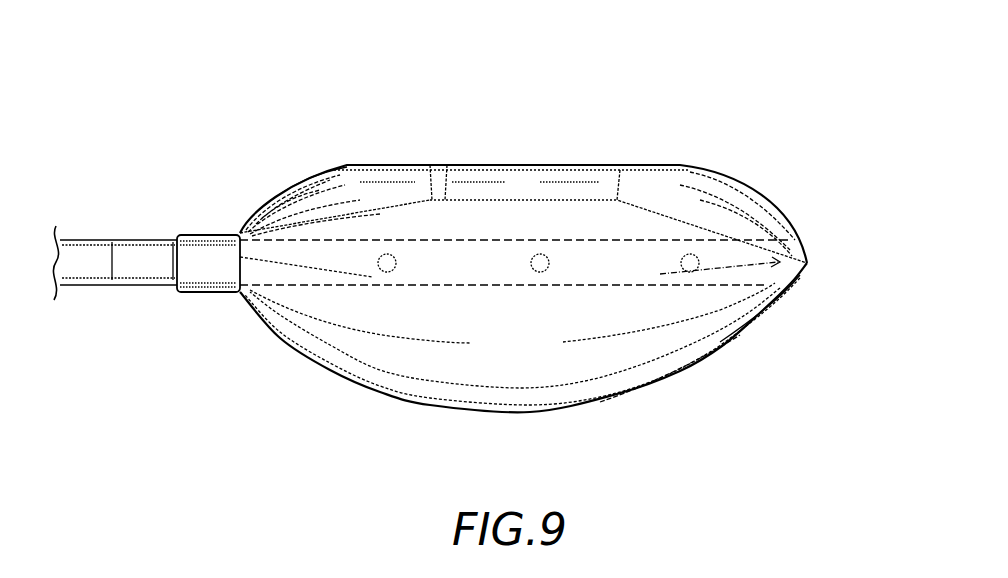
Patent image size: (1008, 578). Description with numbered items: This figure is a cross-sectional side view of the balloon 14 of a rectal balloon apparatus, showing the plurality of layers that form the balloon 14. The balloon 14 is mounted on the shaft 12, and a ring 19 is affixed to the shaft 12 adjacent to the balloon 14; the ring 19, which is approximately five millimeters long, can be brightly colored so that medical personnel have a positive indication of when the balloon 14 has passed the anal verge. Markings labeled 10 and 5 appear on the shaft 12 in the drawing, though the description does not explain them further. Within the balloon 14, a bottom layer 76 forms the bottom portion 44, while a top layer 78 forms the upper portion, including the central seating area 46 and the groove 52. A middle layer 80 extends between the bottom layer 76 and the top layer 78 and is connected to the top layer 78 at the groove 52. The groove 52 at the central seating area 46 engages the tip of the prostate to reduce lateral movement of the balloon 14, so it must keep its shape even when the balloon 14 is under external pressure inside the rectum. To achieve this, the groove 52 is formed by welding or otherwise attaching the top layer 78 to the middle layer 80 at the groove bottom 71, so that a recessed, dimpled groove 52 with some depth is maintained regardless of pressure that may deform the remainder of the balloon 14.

The shaft marking 5 is at (158, 261).
The catheter marking 10 is at (96, 261).
The shaft 12 is at (90, 290).
The balloon 14 is at (783, 218).
The ring 19 is at (207, 235).
The bottom portion 44 is at (677, 378).
The central seating area 46 is at (355, 163).
The groove 52 is at (497, 175).
The groove bottom 71 is at (447, 163).
The bottom layer 76 is at (773, 312).
The top layer 78 is at (673, 163).
The middle layer 80 is at (377, 220).